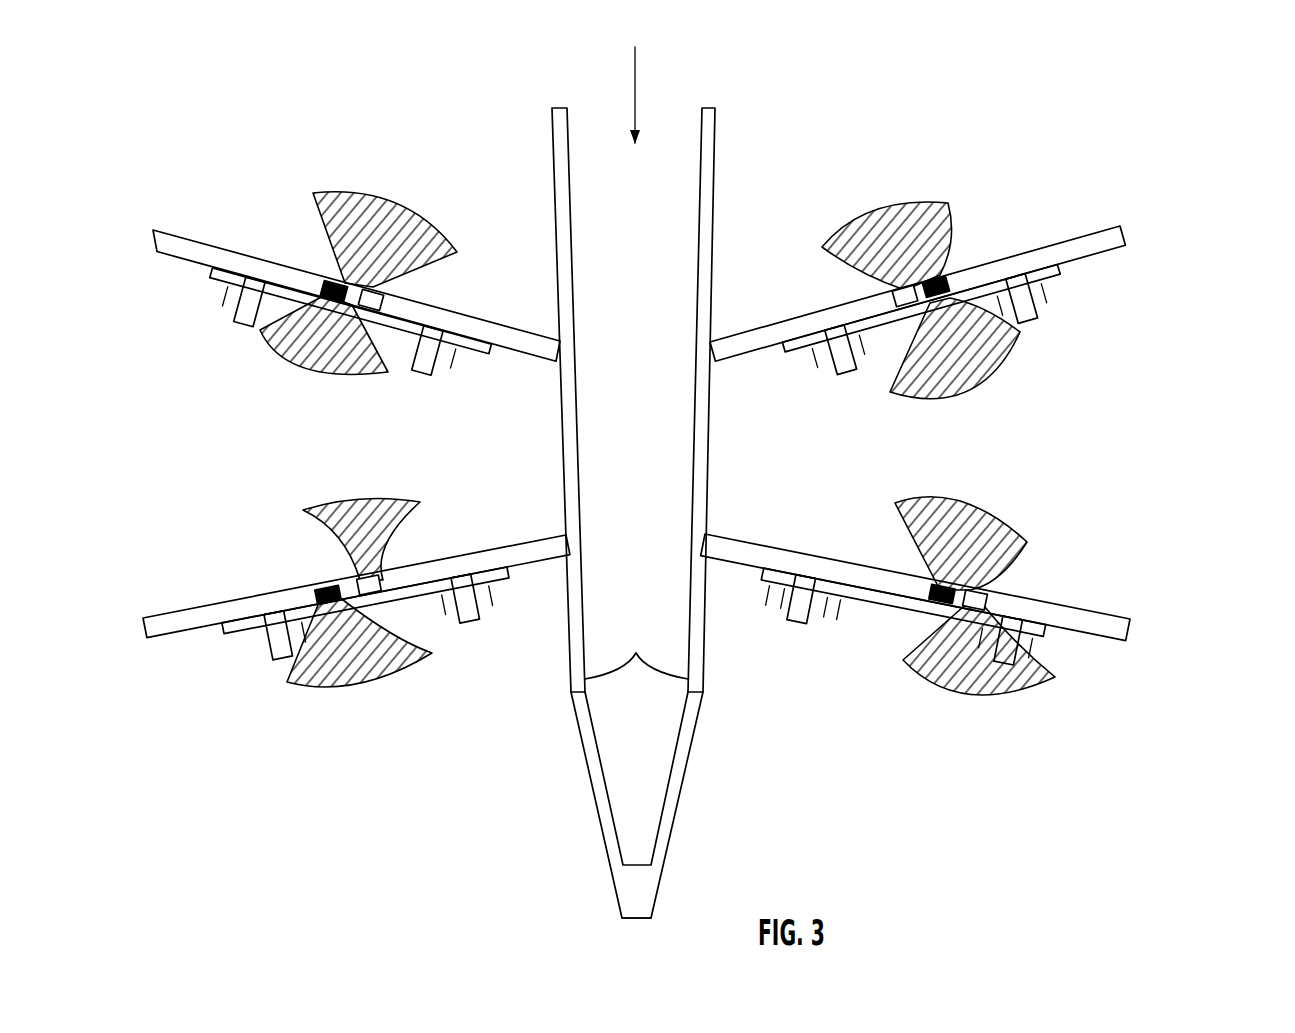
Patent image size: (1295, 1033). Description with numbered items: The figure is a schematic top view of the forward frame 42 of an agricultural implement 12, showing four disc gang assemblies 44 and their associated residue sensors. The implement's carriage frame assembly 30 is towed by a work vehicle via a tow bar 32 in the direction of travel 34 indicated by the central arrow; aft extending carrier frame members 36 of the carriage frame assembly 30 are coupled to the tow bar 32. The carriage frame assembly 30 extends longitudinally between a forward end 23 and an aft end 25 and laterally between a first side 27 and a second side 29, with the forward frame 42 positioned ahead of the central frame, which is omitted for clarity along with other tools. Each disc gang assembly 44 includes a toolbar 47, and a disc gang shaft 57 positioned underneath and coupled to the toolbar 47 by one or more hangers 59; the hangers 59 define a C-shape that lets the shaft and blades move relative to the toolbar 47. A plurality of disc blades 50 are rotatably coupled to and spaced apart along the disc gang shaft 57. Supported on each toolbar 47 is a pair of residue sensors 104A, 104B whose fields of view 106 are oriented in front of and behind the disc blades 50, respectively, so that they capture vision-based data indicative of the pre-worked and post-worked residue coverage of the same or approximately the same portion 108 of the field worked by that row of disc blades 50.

The agricultural implement 12 is at (262, 124).
The forward end 23 is at (589, 884).
The aft end 25 is at (484, 98).
The first side 27 is at (1236, 516).
The second side 29 is at (152, 517).
The carriage frame assembly 30 is at (543, 804).
The tow bar 32 is at (655, 894).
The direction of travel 34 is at (637, 110).
The carrier frame members 36 is at (636, 655).
The forward frame 42 is at (1232, 124).
The disc gang assembly 44 is at (284, 379).
The toolbar 47 is at (222, 247).
The disc blades 50 is at (423, 350).
The disc gang shaft 57 is at (481, 358).
The hangers 59 is at (248, 316).
The residue sensor 104A is at (333, 283).
The residue sensor 104B is at (390, 306).
The fields of view 106 is at (366, 195).
The portion of the field 108 is at (425, 242).